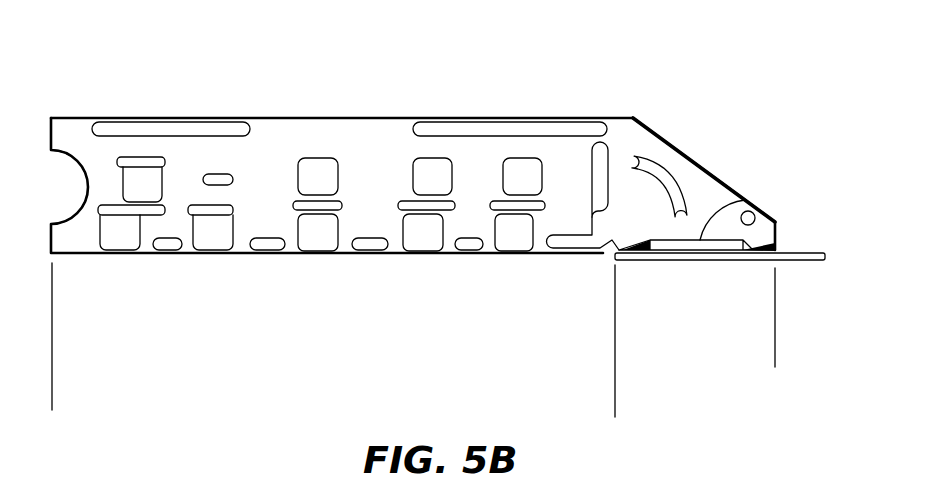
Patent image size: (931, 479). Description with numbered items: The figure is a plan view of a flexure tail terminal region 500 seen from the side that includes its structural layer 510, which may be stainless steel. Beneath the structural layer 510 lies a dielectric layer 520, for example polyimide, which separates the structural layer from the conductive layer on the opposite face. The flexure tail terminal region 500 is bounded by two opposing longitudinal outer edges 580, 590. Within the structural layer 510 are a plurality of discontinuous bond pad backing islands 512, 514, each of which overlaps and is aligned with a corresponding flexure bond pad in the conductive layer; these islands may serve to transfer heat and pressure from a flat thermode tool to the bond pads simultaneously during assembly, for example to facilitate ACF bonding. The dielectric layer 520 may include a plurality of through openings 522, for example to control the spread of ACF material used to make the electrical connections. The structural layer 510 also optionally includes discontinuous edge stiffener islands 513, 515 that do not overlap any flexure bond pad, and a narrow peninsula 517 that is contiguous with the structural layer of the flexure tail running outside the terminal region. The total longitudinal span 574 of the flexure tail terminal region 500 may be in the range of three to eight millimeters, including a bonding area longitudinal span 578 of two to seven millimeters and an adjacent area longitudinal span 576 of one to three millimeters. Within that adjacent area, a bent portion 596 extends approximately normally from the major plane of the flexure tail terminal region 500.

The flexure tail terminal region 500 is at (668, 78).
The dielectric layer 520 is at (70, 128).
The discontinuous edge stiffener island 513 is at (180, 130).
The narrow peninsula 517 is at (512, 130).
The longitudinal outer edge 580 is at (603, 118).
The longitudinal outer edge 590 is at (545, 246).
The discontinuous bond pad backing island 514 is at (140, 187).
The through opening 522 is at (170, 210).
The discontinuous bond pad backing island 512 is at (120, 232).
The discontinuous edge stiffener island 515 is at (168, 245).
The structural layer 510 is at (687, 172).
The bent portion 596 is at (718, 203).
The adjacent area longitudinal span 576 is at (775, 308).
The total longitudinal span 574 is at (775, 350).
The bonding area longitudinal span 578 is at (615, 397).